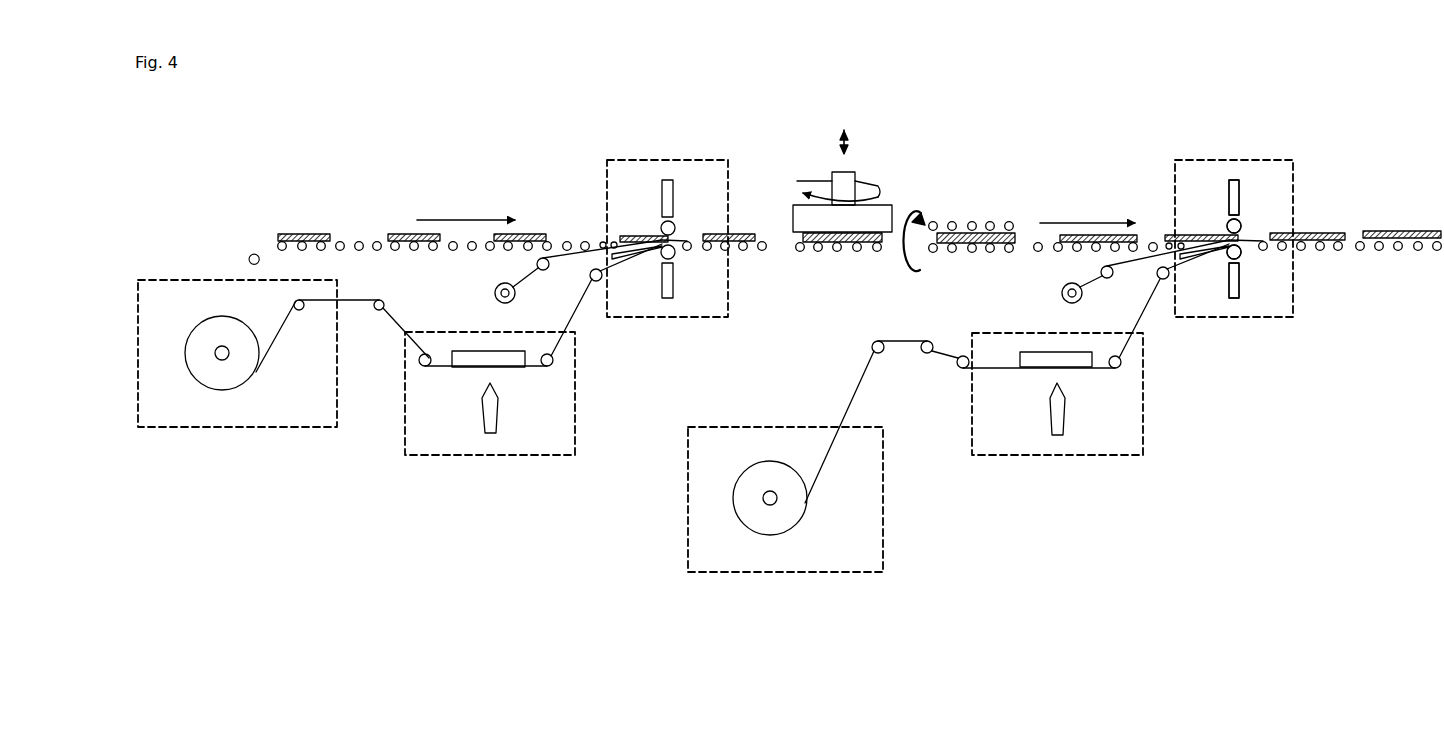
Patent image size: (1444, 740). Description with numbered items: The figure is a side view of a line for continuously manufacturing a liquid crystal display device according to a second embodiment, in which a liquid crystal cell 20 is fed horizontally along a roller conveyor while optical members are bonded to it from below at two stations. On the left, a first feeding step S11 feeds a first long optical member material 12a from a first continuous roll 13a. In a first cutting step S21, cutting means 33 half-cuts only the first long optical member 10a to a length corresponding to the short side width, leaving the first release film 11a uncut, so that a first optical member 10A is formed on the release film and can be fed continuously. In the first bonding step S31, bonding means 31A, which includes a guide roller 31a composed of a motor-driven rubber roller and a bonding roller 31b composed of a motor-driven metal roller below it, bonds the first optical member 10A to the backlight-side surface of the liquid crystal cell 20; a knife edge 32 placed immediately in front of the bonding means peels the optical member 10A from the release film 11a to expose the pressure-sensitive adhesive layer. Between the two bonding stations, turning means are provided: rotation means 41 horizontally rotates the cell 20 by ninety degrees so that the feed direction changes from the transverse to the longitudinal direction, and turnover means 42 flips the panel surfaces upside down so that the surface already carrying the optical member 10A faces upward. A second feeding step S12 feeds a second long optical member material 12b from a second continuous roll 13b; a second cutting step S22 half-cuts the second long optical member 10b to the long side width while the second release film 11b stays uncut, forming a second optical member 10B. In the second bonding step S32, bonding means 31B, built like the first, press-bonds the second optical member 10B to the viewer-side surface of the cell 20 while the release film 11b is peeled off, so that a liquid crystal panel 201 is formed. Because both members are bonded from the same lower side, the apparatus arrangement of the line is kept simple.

The liquid crystal cell 20 is at (305, 233).
The liquid crystal panel 201 is at (1393, 231).
The rotation means 41 is at (808, 150).
The turnover means 42 is at (974, 196).
The first feeding step S11 is at (228, 427).
The second feeding step S12 is at (777, 573).
The first cutting step S21 is at (470, 455).
The second cutting step S22 is at (1042, 457).
The first bonding step S31 is at (690, 317).
The second bonding step S32 is at (1257, 317).
The first continuous roll 13a is at (200, 331).
The second continuous roll 13b is at (748, 474).
The first long optical member material 12a is at (268, 374).
The second long optical member material 12b is at (816, 521).
The first long optical member 10a is at (273, 350).
The second long optical member 10b is at (819, 494).
The first release film 11a is at (275, 327).
The second release film 11b is at (824, 470).
The cutting means 33 is at (498, 413).
The bonding means 31A is at (645, 184).
The bonding means 31B is at (1214, 184).
The guide roller 31a is at (636, 211).
The bonding roller 31b is at (691, 285).
The knife edge 32 is at (627, 259).
The first optical member 10A is at (653, 250).
The second optical member 10B is at (1223, 250).